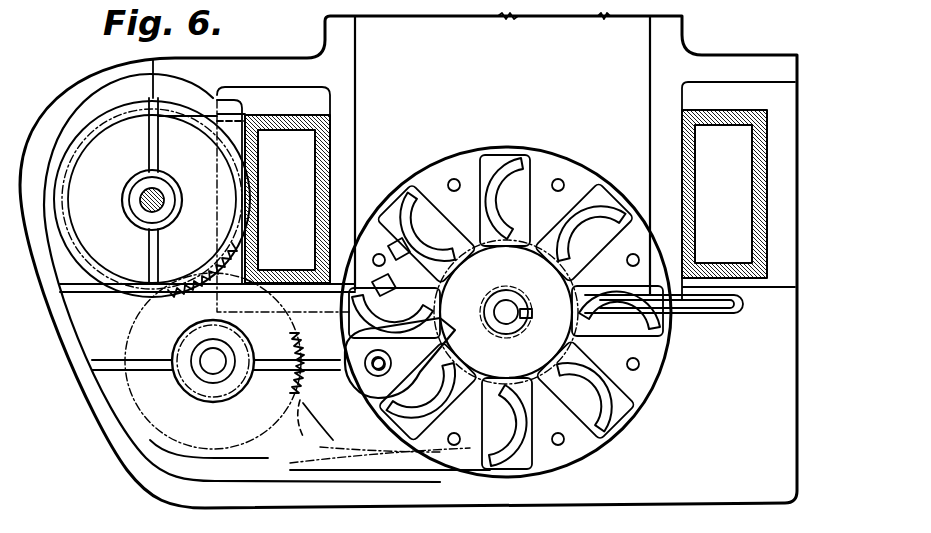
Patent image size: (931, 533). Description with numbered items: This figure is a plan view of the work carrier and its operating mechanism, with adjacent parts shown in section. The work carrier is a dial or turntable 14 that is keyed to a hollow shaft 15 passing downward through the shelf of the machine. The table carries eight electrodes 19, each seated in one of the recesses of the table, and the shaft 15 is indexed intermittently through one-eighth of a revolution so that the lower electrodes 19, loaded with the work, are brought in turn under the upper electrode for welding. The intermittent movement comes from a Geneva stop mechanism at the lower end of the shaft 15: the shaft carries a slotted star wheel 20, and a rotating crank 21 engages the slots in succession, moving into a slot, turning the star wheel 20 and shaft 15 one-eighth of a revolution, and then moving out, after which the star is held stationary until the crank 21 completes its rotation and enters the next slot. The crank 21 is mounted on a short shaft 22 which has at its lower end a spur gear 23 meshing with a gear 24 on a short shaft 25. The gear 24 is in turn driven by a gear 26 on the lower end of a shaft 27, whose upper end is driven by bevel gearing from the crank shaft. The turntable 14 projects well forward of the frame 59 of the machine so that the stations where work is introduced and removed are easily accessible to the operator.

The dial or turntable 14 is at (399, 186).
The hollow shaft 15 is at (526, 328).
The electrodes 19 is at (595, 192).
The slotted star wheel 20 is at (391, 252).
The rotating crank 21 is at (378, 284).
The short shaft 22 is at (354, 384).
The spur gear 23 is at (306, 436).
The gear 24 is at (283, 422).
The short shaft 25 is at (213, 363).
The gear 26 is at (92, 268).
The shaft 27 is at (140, 200).
The frame 59 is at (259, 219).